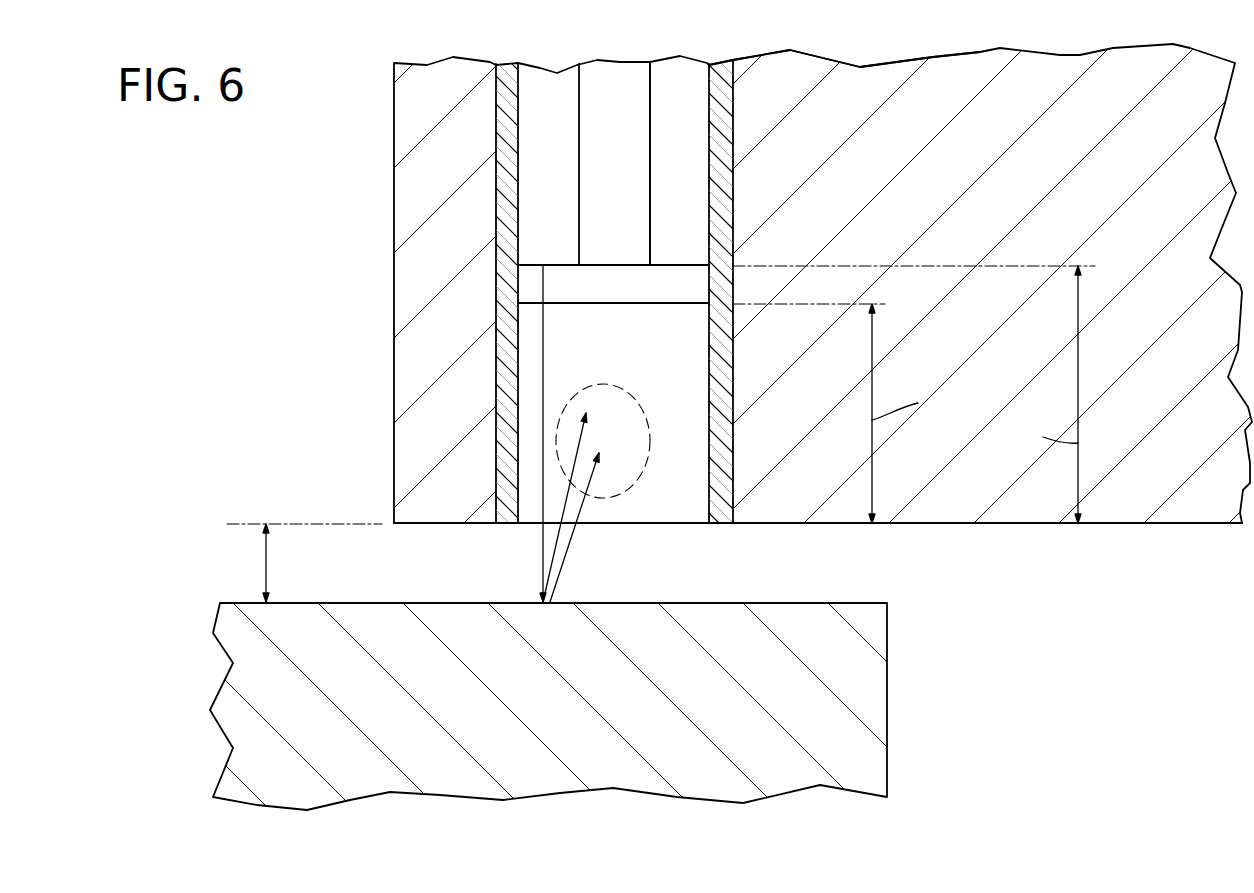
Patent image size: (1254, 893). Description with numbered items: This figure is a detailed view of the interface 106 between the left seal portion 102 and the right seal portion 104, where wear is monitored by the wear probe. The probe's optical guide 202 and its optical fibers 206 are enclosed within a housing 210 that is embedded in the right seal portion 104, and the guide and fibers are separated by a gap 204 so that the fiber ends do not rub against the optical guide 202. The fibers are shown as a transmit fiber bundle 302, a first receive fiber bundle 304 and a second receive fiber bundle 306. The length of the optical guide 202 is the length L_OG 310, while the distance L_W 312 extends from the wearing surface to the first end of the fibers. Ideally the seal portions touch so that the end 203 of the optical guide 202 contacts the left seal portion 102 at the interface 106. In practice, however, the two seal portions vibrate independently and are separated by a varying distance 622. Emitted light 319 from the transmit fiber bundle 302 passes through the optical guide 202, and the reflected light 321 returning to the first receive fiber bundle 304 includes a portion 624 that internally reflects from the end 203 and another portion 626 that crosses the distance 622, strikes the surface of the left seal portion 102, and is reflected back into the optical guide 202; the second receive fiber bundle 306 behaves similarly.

The left seal portion 102 is at (710, 694).
The right seal portion 104 is at (1043, 195).
The interface 106 is at (892, 567).
The optical guide 202 is at (692, 379).
The end of the optical guide 203 is at (668, 524).
The gap 204 is at (709, 283).
The optical fibers 206 is at (690, 102).
The housing 210 is at (495, 371).
The transmit fiber bundle 302 is at (567, 207).
The first receive fiber bundle 304 is at (634, 207).
The second receive fiber bundle 306 is at (701, 207).
The length L_OG 310 is at (872, 347).
The distance L_W 312 is at (1078, 363).
The emitted light 319 is at (544, 283).
The first reflected light path 321 is at (616, 384).
The gap distance 622 is at (263, 559).
The internally reflected light portion 624 is at (583, 432).
The gap-traversing light portion 626 is at (563, 557).